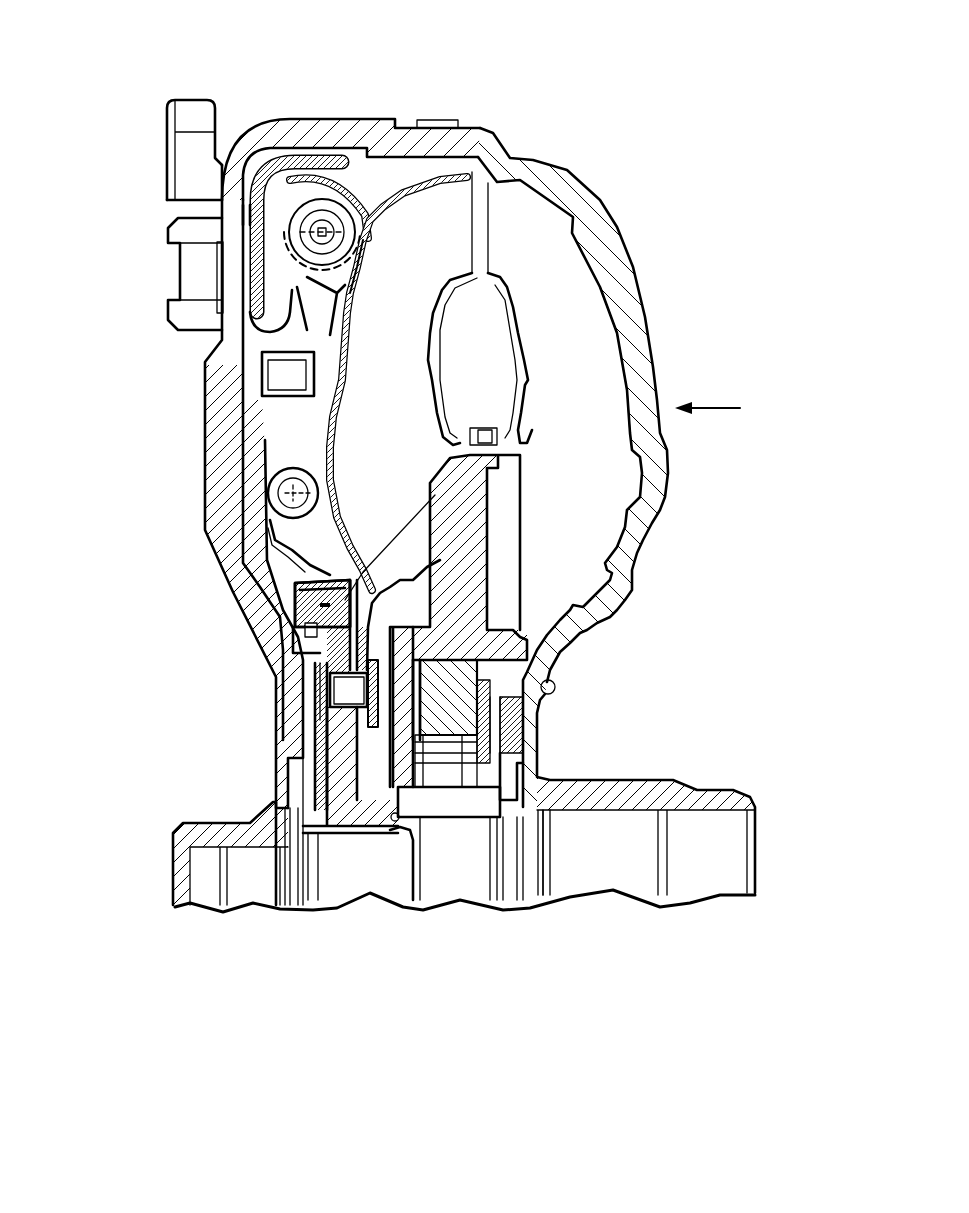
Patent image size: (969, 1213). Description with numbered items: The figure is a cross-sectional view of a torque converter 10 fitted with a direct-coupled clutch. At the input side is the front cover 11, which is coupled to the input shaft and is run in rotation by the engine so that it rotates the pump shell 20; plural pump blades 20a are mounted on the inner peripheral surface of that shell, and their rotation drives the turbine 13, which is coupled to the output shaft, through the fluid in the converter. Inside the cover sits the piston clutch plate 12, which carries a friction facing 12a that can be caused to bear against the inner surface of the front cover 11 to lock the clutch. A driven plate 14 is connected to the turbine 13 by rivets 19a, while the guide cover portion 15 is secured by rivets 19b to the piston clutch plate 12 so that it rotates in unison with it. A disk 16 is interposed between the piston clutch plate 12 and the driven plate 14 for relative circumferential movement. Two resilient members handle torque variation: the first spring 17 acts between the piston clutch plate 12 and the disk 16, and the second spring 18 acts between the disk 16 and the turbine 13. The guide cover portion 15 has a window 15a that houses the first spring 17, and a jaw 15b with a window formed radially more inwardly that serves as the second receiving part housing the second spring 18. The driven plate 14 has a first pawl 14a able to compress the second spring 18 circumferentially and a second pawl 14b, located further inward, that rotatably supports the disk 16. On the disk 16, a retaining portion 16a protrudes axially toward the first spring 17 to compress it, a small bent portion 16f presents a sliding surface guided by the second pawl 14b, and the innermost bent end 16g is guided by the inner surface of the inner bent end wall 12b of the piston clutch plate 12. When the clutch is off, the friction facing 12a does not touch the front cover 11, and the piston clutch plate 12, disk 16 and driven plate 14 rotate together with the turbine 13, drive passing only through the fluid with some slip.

The torque converter 10 is at (566, 118).
The front cover 11 is at (305, 125).
The piston clutch plate 12 is at (278, 165).
The friction facing 12a is at (242, 215).
The inner bent end wall 12b is at (345, 617).
The turbine 13 is at (453, 193).
The driven plate 14 is at (360, 587).
The first pawl 14a is at (290, 493).
The second pawl 14b is at (340, 606).
The guide cover portion 15 is at (350, 190).
The window (first receiving part) 15a is at (370, 232).
The jaw 15b is at (323, 495).
The disk 16 is at (297, 448).
The retaining portion 16a is at (376, 280).
The small bent portion 16f is at (313, 560).
The bent end 16g is at (327, 612).
The first spring 17 is at (350, 252).
The second spring 18 is at (313, 483).
The rivets 19a is at (340, 693).
The rivets 19b is at (275, 378).
The housing shell 20 is at (615, 270).
The pump blades 20a is at (605, 348).